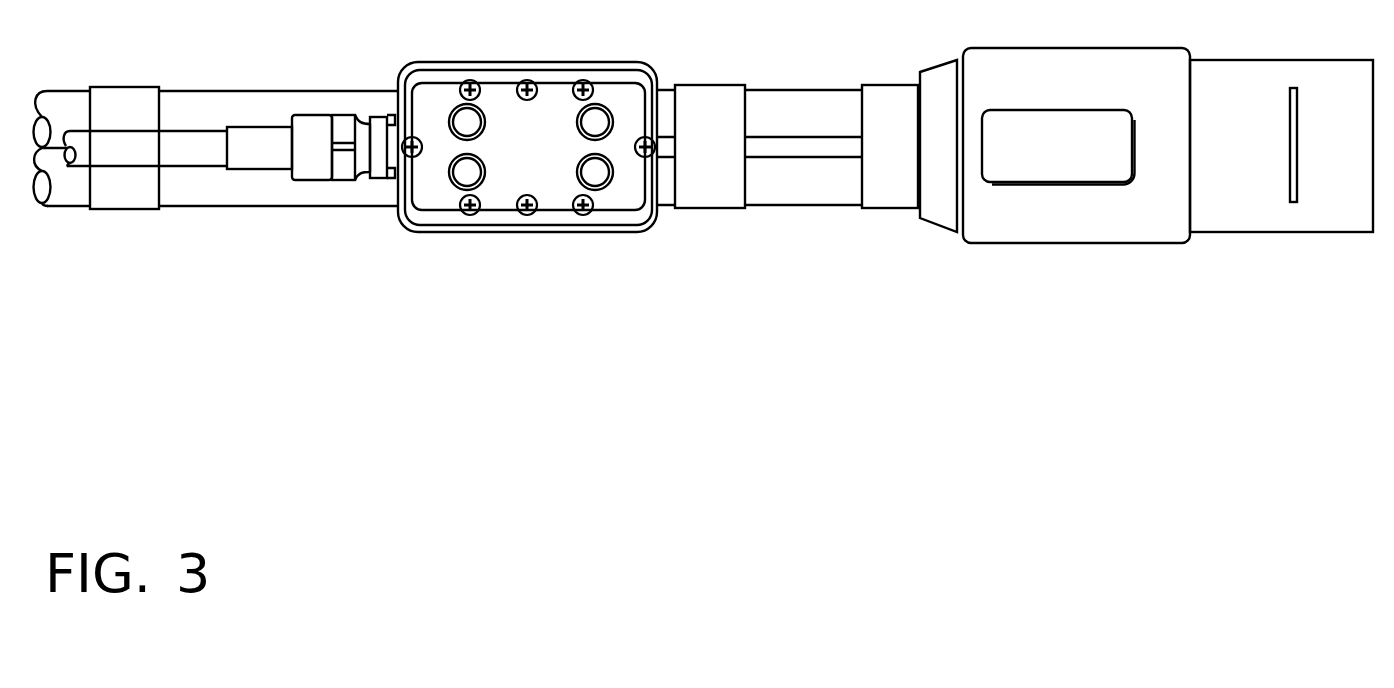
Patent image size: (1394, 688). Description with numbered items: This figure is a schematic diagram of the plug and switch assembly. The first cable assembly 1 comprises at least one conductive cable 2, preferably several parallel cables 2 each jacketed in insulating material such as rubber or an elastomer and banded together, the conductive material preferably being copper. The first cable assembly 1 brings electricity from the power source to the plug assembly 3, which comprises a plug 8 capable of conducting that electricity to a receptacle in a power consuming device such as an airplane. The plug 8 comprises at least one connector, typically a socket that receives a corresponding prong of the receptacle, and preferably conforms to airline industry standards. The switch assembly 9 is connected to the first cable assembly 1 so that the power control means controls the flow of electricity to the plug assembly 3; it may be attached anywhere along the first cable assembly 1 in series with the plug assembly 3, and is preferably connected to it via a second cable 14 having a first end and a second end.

The first cable assembly 1 is at (788, 154).
The conductive cable 2 is at (800, 95).
The plug assembly 3 is at (1146, 140).
The plug 8 is at (1088, 235).
The switch assembly 9 is at (552, 233).
The second cable 14 is at (187, 155).